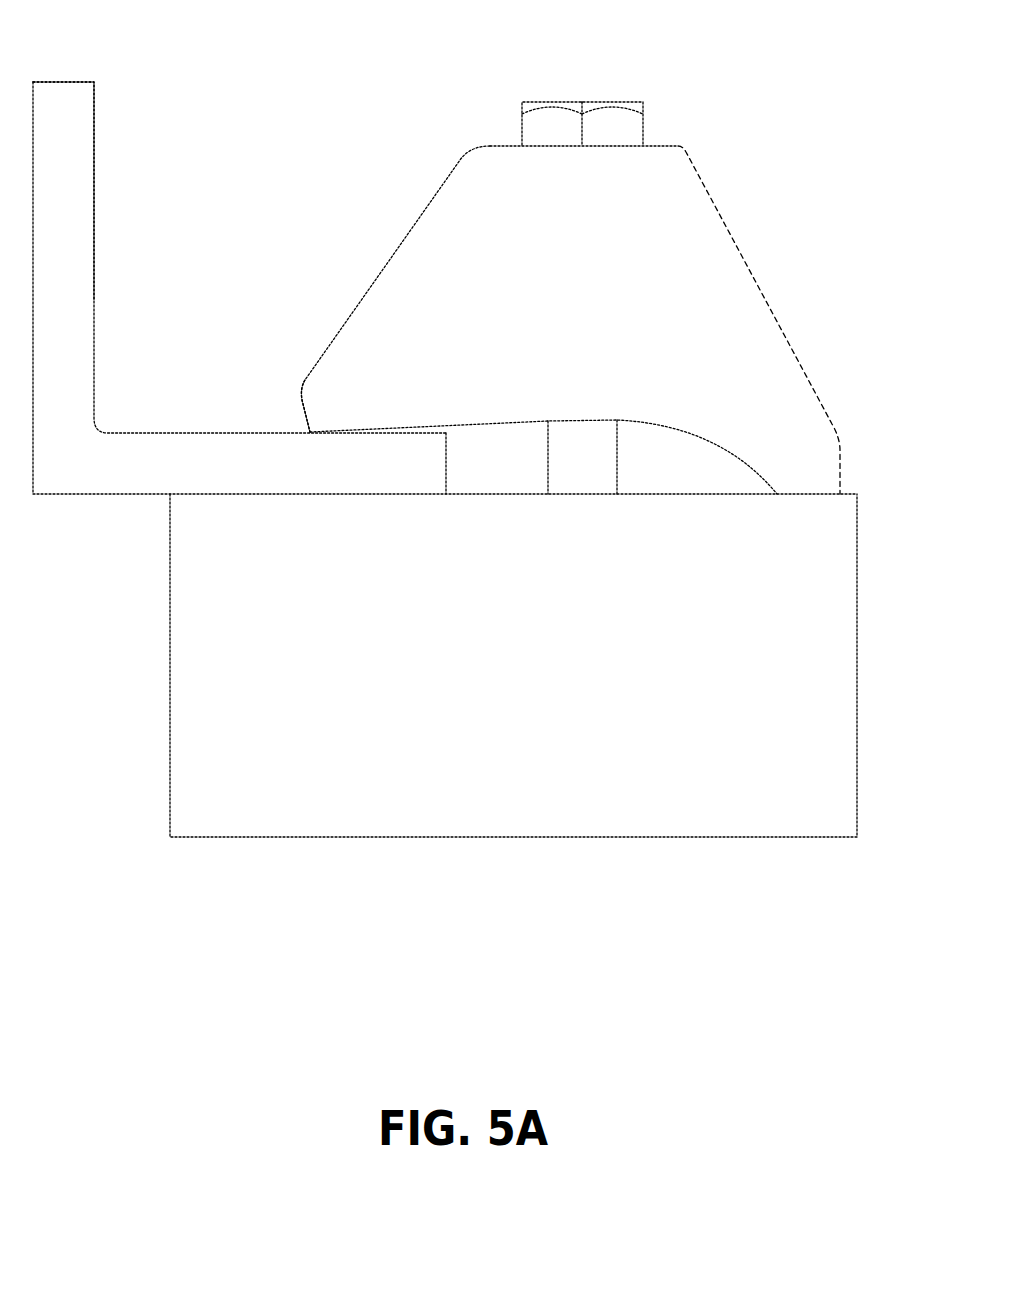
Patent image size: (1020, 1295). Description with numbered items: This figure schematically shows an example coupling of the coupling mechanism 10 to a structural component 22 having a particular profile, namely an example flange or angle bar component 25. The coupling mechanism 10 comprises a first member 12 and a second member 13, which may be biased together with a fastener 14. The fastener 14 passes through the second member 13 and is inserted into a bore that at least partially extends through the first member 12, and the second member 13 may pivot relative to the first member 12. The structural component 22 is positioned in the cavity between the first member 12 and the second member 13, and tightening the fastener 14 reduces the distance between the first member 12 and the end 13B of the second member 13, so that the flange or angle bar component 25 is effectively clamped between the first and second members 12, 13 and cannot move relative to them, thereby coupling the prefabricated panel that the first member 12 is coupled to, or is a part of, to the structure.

The coupling mechanism 10 is at (758, 192).
The first member 12 is at (653, 808).
The second member 13 is at (745, 349).
The end of second member 13B is at (310, 420).
The fastener 14 is at (608, 125).
The structural component 22 is at (107, 280).
The flange or angle bar component 25 is at (65, 167).